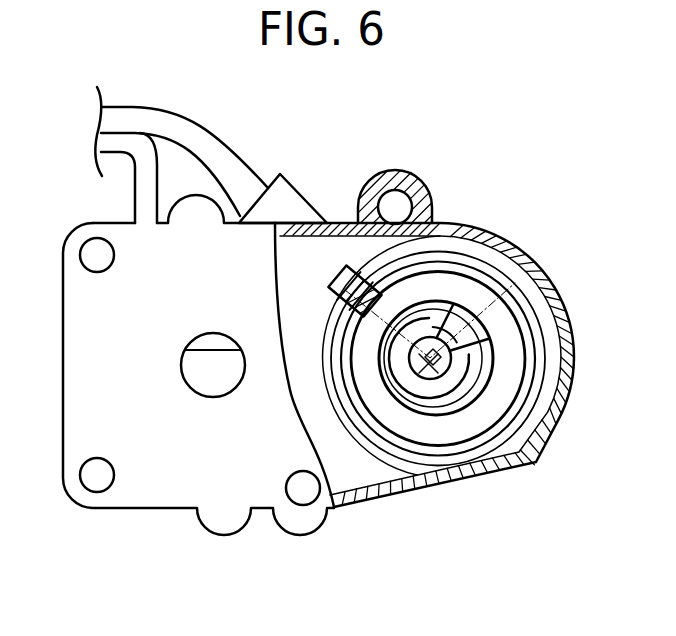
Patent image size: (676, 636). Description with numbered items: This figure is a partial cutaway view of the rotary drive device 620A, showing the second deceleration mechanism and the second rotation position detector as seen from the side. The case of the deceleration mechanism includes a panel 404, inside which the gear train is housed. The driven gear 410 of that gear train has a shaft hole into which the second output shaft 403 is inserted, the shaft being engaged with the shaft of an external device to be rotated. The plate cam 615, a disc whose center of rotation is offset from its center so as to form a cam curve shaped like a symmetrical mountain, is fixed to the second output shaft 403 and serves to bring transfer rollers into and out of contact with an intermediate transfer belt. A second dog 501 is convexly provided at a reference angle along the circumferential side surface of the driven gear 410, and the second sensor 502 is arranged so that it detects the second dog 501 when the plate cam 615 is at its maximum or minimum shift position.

The rotary drive device 620A is at (488, 148).
The panel 404 is at (156, 508).
The second dog 501 is at (355, 450).
The driven gear 410 is at (450, 255).
The plate cam 615 is at (460, 407).
The second output shaft 403 is at (423, 373).
The second sensor 502 is at (342, 277).